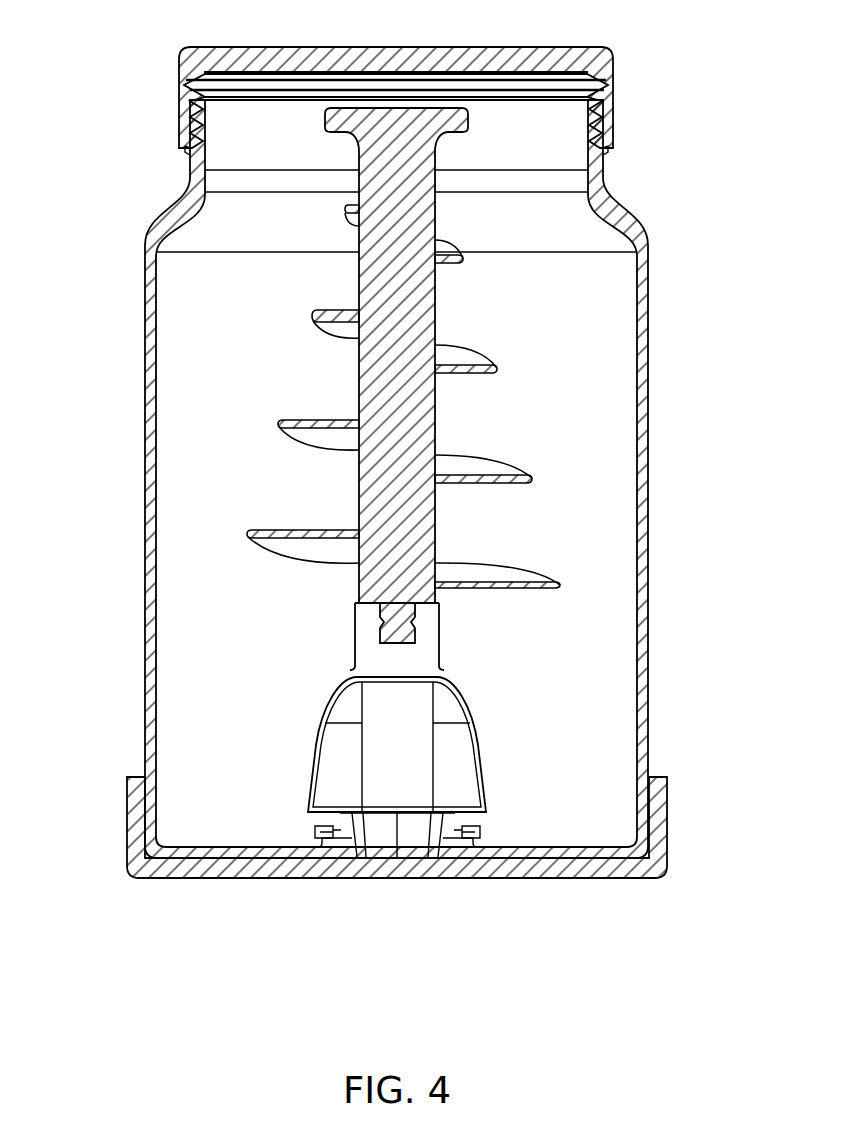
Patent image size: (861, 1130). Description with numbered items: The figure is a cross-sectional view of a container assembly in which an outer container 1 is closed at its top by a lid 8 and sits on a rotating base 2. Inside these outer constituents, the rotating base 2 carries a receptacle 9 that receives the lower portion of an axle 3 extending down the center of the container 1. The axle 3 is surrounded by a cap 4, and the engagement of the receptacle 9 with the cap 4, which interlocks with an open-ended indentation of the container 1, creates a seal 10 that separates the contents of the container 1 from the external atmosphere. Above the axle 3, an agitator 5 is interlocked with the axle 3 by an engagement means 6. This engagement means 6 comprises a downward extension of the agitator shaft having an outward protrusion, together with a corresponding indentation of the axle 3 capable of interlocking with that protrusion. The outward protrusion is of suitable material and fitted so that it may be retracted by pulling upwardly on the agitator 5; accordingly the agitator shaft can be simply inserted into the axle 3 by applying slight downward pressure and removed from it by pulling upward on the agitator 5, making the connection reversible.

The container 1 is at (143, 292).
The rotating base 2 is at (127, 828).
The axle 3 is at (355, 622).
The cap 4 is at (474, 742).
The agitator 5 is at (436, 422).
The engagement means 6 is at (440, 627).
The lid 8 is at (180, 72).
The receptacle 9 is at (330, 848).
The seal 10 is at (470, 840).